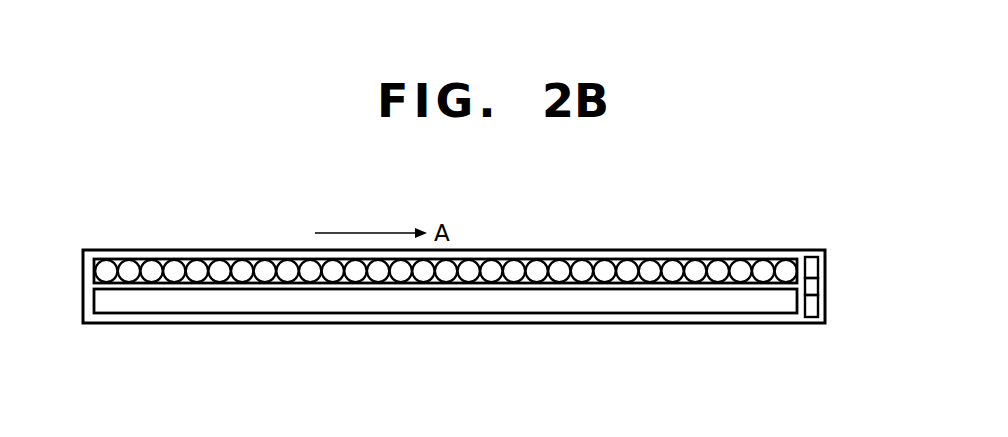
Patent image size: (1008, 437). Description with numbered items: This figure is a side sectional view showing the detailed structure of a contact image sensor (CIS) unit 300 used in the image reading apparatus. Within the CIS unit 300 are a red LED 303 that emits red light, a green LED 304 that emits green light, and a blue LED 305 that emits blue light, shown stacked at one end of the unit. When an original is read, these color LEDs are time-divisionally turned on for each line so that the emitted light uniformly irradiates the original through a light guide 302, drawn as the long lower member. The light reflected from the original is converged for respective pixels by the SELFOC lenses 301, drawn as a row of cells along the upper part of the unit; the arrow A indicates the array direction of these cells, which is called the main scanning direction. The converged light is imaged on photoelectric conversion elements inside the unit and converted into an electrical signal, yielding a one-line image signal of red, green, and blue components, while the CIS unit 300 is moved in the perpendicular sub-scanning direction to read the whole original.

The contact image sensor (CIS) unit 300 is at (506, 195).
The SELFOC lenses 301 is at (151, 270).
The light guide 302 is at (303, 302).
The red LED 303 is at (818, 270).
The green LED 304 is at (818, 287).
The blue LED 305 is at (818, 304).